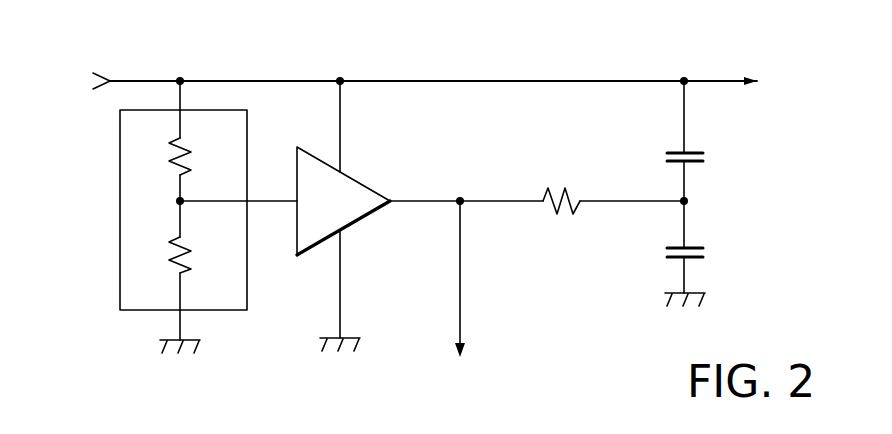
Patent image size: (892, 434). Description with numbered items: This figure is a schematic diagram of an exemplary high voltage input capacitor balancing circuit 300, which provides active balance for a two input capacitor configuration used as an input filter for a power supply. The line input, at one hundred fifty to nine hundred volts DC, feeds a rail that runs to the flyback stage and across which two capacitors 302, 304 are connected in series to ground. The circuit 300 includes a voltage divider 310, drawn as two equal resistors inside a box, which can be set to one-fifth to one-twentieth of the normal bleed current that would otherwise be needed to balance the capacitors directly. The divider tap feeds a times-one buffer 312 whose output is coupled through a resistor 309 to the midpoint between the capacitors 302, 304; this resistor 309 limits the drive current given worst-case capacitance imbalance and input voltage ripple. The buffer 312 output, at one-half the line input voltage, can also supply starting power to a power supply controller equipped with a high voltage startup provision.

The high voltage input capacitor balancing circuit 300 is at (620, 62).
The capacitor 302 is at (667, 152).
The capacitor 304 is at (667, 248).
The resistor 309 is at (553, 214).
The voltage divider 310 is at (138, 312).
The X1 buffer 312 is at (352, 180).